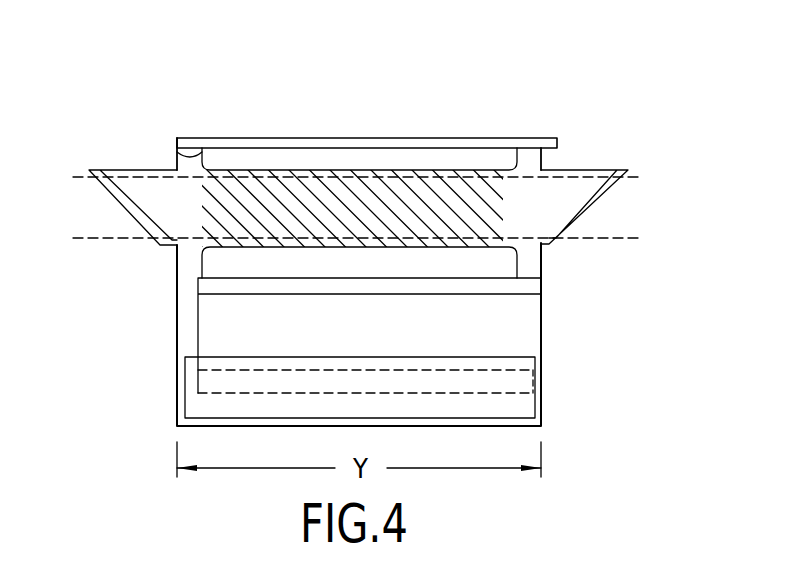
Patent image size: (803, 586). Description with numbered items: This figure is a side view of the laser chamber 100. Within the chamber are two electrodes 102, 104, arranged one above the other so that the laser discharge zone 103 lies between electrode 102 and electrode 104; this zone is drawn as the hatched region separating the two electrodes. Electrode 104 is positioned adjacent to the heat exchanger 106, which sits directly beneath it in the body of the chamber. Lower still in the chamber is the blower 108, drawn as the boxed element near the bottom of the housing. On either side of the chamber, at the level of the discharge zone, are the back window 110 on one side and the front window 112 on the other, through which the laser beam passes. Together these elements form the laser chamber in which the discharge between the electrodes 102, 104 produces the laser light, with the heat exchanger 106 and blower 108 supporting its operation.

The laser chamber 100 is at (535, 125).
The electrode 102 is at (177, 155).
The laser discharge zone 103 is at (341, 188).
The electrode 104 is at (202, 263).
The heat exchanger 106 is at (528, 332).
The blower 108 is at (195, 403).
The back window 110 is at (133, 218).
The front window 112 is at (585, 225).